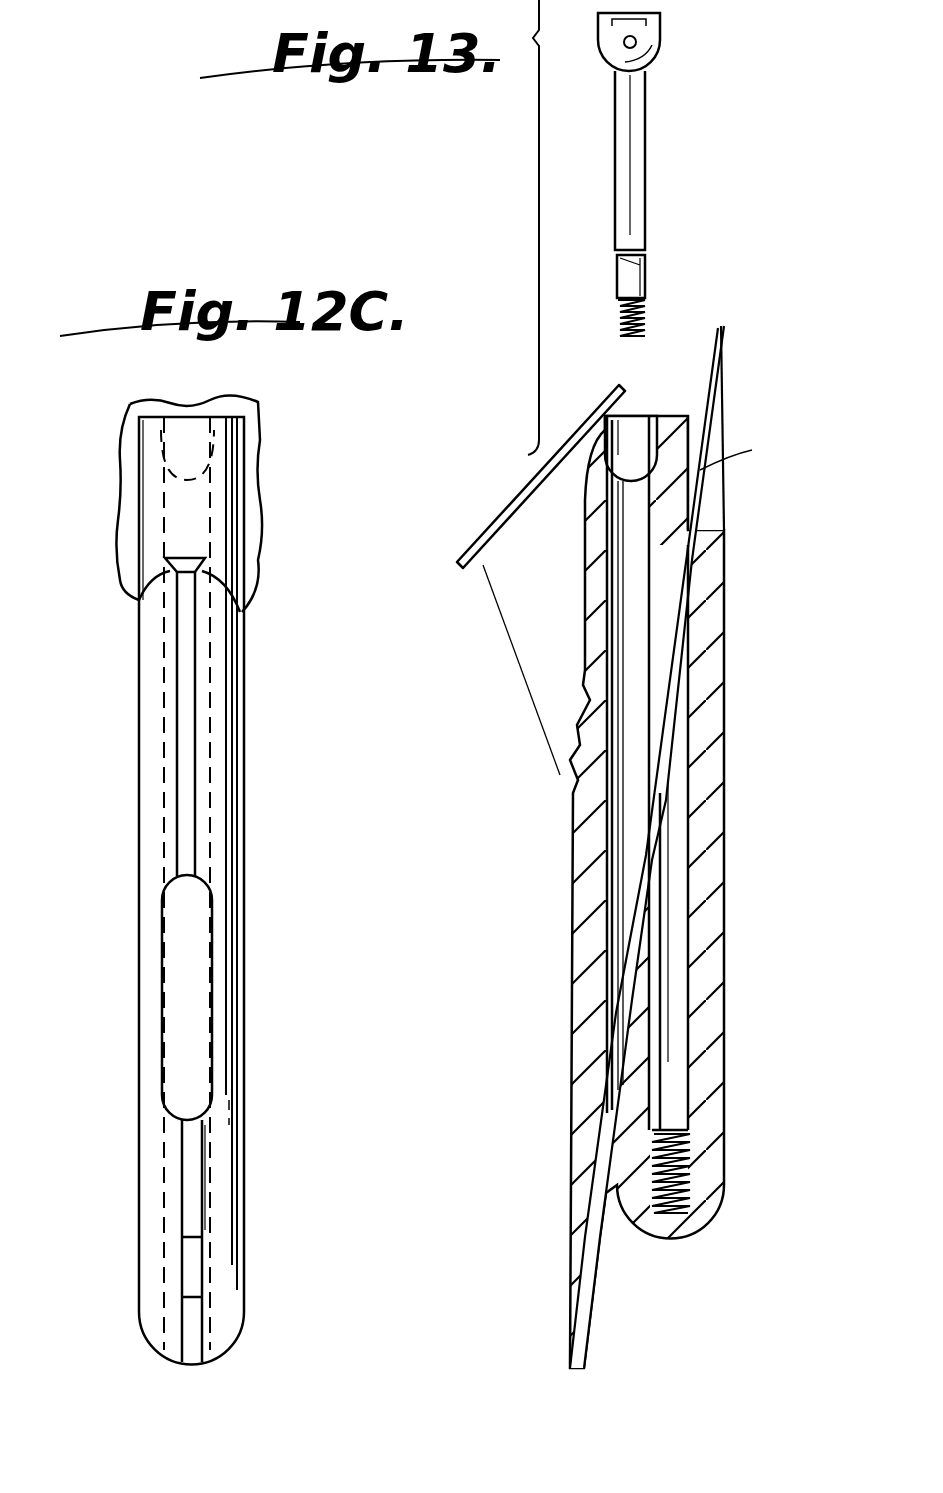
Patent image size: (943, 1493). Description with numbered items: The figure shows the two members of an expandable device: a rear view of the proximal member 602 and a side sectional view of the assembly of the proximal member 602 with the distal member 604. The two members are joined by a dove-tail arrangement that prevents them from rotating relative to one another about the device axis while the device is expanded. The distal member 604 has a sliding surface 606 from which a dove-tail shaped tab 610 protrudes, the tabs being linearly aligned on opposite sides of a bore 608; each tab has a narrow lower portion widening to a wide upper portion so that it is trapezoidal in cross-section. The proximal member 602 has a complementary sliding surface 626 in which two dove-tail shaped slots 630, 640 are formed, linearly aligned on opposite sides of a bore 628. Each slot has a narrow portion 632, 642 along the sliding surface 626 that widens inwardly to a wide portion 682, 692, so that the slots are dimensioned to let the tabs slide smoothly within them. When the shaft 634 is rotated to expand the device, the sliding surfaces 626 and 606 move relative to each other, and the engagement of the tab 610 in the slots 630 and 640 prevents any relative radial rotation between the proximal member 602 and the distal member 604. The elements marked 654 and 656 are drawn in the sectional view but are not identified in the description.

In FIG. 12C, the proximal member 602 is at (286, 682).
In FIG. 13, the proximal member 602 is at (524, 606).
In FIG. 13, the distal member 604 is at (726, 840).
In FIG. 13, the sliding surface 606 is at (758, 616).
In FIG. 13, the bore 608 is at (680, 956).
In FIG. 13, the dove-tail shaped tab 610 is at (704, 352).
In FIG. 12C, the sliding surface 626 is at (230, 865).
In FIG. 13, the sliding surface 626 is at (666, 684).
In FIG. 12C, the bore 628 is at (195, 1002).
In FIG. 13, the bore 628 is at (627, 742).
In FIG. 12C, the dove-tail shaped slot 630 is at (188, 746).
In FIG. 13, the dove-tail shaped slot 630 is at (680, 626).
In FIG. 12C, the narrow portion 632 is at (200, 637).
In FIG. 13, the shaft 634 is at (648, 206).
In FIG. 12C, the dove-tail shaped slot 640 is at (190, 1184).
In FIG. 12C, the narrow portion 642 is at (210, 1160).
In FIG. 13, the handle head 654 is at (662, 50).
In FIG. 13, the rod head 656 is at (640, 422).
In FIG. 12C, the wide portion 682 is at (212, 704).
In FIG. 12C, the wide portion 692 is at (210, 1282).